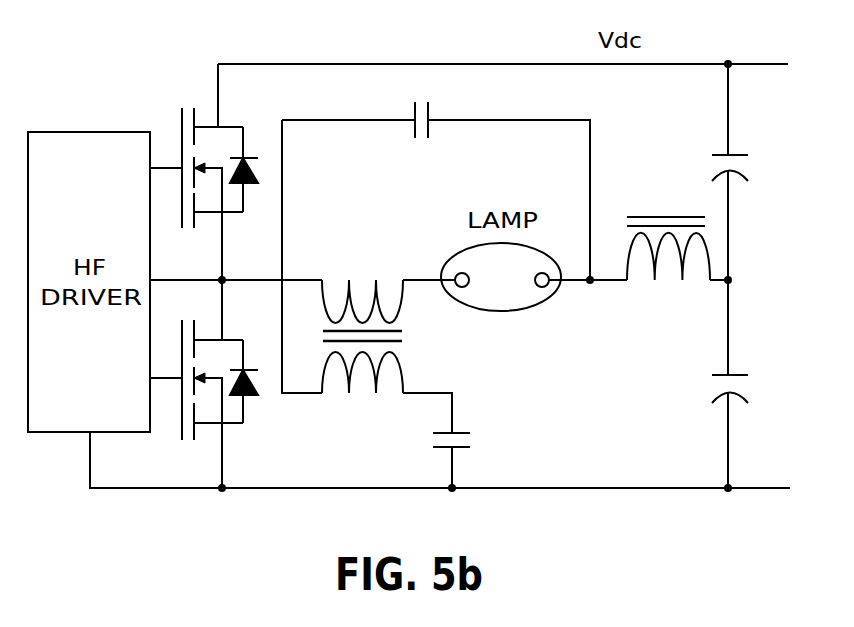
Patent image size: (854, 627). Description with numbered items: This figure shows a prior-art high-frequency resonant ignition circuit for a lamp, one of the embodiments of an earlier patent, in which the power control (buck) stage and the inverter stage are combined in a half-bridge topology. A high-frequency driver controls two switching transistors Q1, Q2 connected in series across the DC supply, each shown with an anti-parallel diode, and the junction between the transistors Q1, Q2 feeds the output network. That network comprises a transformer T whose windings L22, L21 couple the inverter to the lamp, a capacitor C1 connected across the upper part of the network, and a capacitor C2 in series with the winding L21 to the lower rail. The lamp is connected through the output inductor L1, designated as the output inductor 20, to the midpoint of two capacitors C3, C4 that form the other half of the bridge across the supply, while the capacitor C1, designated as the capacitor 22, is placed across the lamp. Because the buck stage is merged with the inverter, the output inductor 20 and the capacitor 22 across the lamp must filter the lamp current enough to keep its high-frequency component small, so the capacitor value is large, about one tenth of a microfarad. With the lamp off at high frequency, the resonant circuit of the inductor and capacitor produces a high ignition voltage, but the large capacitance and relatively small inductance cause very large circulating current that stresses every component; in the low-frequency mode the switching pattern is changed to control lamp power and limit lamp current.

The output inductor 20 is at (665, 224).
The capacitor 22 is at (436, 181).
The upper switching transistor Q1 is at (206, 172).
The lower switching transistor Q2 is at (213, 384).
The capacitor C1 is at (466, 97).
The capacitor C2 is at (473, 459).
The capacitor C3 is at (753, 172).
The capacitor C4 is at (752, 384).
The inductor L1 is at (623, 192).
The transformer primary winding L21 is at (362, 392).
The transformer secondary winding L22 is at (362, 275).
The transformer T is at (373, 330).